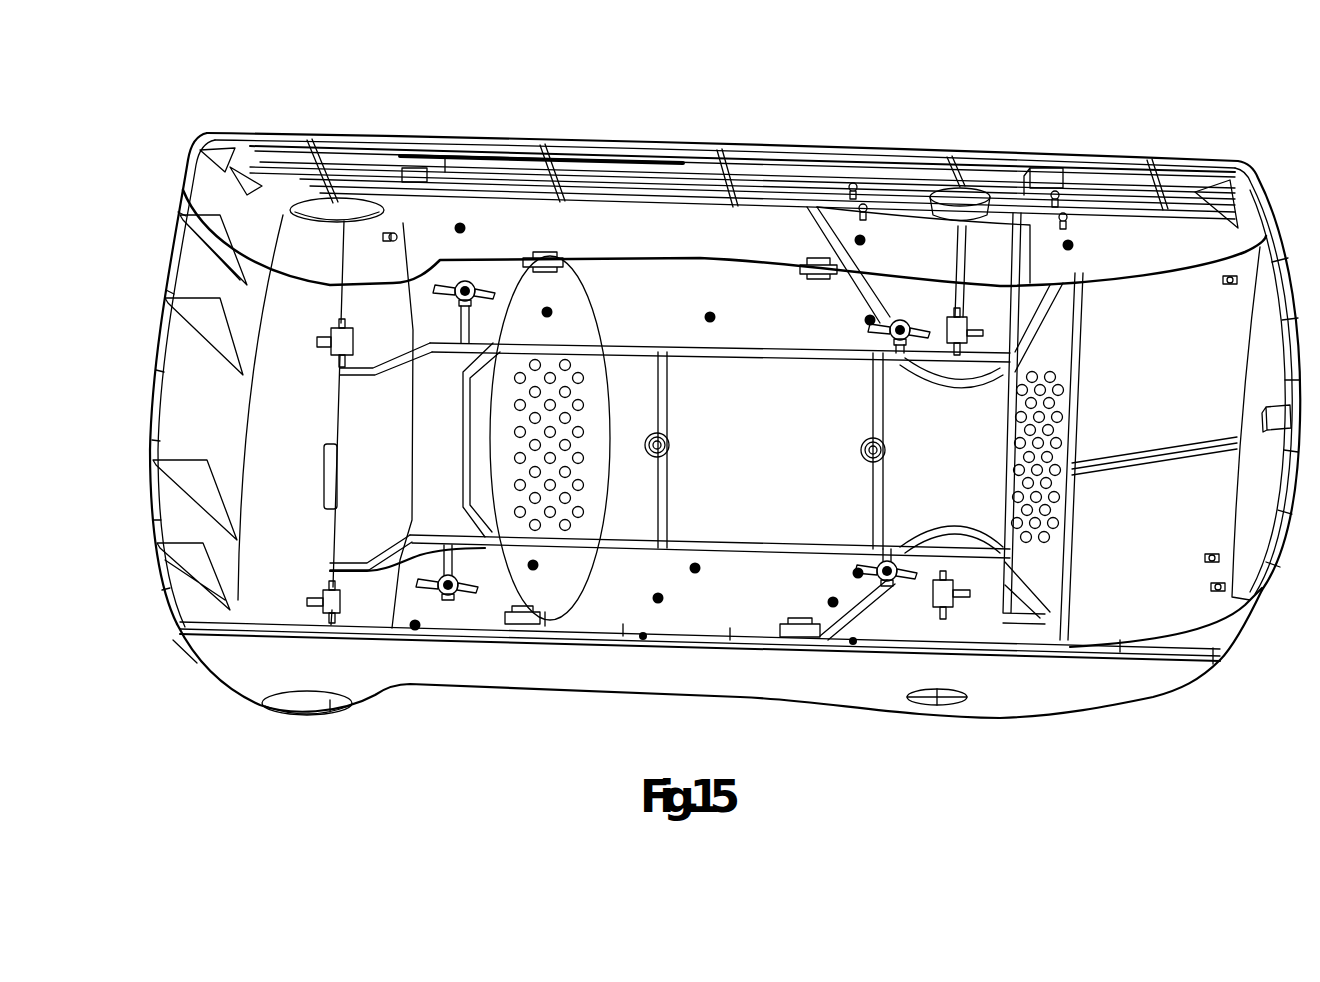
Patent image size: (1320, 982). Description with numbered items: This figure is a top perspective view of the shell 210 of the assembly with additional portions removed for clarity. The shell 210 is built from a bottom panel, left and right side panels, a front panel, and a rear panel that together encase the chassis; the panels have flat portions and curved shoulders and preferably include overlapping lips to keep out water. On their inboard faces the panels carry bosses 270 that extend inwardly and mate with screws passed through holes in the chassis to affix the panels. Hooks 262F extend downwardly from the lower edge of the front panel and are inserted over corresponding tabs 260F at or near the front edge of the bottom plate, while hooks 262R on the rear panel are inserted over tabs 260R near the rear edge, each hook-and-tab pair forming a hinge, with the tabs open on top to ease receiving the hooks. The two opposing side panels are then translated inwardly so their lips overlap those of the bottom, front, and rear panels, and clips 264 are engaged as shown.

The shell 210 is at (1162, 109).
The tabs 260R is at (246, 424).
The hooks 262R is at (323, 73).
The tabs 260F is at (991, 440).
The hooks 262F is at (930, 98).
The clips 264 is at (552, 252).
The bosses 270 is at (468, 283).